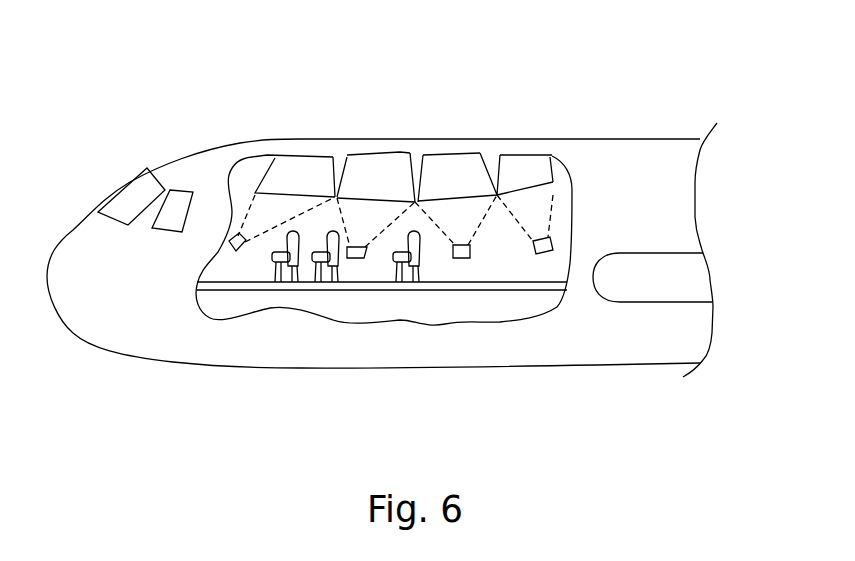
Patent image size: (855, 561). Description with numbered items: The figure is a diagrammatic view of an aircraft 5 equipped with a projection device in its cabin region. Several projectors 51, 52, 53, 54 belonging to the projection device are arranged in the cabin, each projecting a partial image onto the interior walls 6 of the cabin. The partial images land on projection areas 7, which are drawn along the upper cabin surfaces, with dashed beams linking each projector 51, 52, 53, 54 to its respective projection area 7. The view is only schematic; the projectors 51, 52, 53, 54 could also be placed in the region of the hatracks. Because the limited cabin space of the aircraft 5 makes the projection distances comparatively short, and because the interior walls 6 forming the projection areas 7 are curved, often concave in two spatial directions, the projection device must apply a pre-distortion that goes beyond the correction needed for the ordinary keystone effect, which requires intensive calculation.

The aircraft 5 is at (655, 175).
The interior walls 6 is at (247, 178).
The projection areas 7 is at (313, 178).
The projector 51 is at (233, 243).
The projector 52 is at (542, 239).
The projector 53 is at (357, 258).
The projector 54 is at (460, 258).